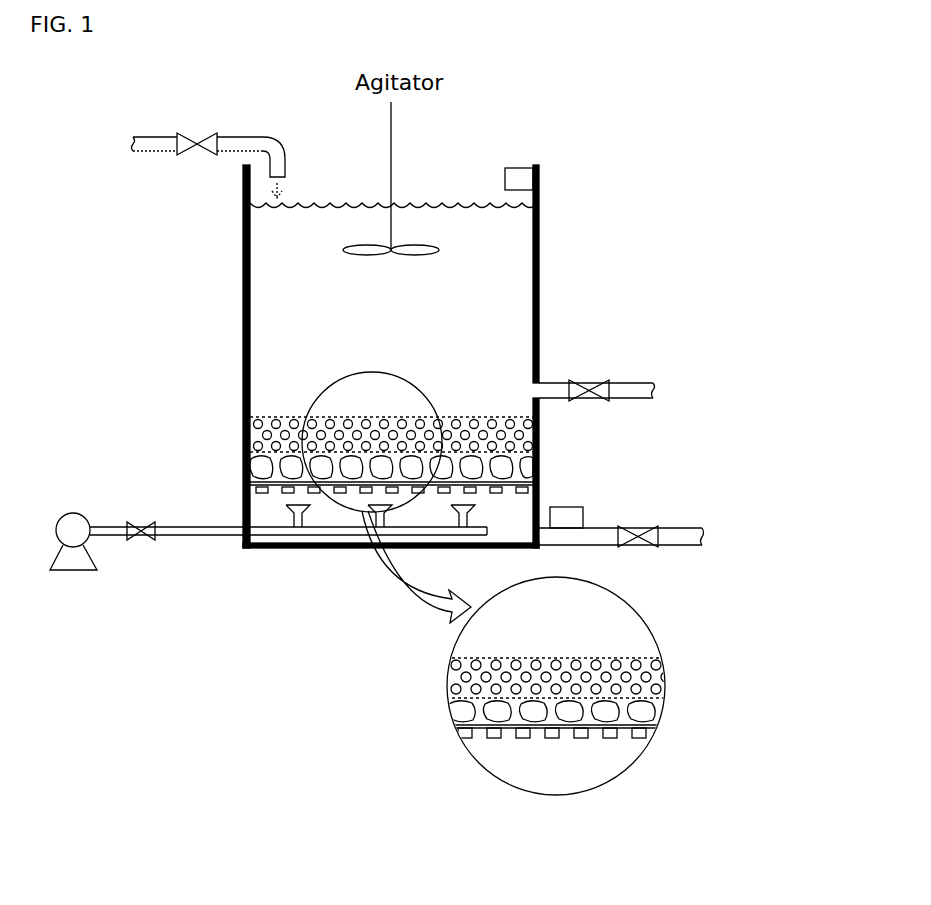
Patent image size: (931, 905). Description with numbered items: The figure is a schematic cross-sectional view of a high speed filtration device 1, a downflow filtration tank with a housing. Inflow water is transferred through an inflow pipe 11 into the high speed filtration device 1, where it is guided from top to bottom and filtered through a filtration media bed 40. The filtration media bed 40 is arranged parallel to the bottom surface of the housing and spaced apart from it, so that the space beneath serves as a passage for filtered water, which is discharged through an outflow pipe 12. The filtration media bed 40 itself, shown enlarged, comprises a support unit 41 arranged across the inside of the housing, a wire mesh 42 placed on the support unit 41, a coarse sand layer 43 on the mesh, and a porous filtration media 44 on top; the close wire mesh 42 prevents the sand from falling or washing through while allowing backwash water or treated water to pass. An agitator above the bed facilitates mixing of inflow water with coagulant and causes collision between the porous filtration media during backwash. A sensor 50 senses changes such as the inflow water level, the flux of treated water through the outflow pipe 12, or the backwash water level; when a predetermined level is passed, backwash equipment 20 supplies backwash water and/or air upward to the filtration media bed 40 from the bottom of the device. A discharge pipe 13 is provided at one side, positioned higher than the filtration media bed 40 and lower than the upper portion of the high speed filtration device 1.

The high speed filtration device 1 is at (524, 105).
The inflow pipe 11 is at (241, 134).
The outflow pipe 12 is at (592, 536).
The discharge pipe 13 is at (556, 392).
The backwash equipment 20 is at (200, 530).
The filtration media bed 40 is at (619, 690).
The support unit 41 is at (608, 736).
The wire mesh 42 is at (648, 728).
The coarse sand layer 43 is at (643, 710).
The porous filtration media 44 is at (650, 672).
The sensor 50 is at (525, 178).